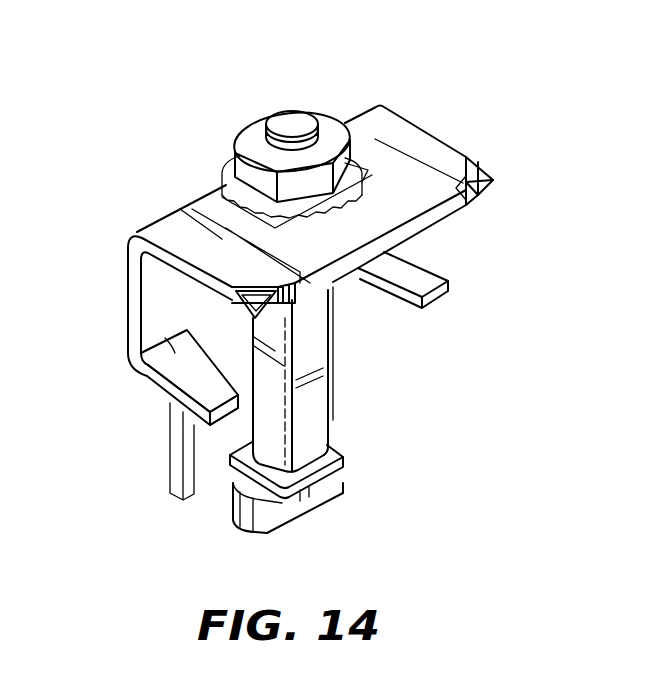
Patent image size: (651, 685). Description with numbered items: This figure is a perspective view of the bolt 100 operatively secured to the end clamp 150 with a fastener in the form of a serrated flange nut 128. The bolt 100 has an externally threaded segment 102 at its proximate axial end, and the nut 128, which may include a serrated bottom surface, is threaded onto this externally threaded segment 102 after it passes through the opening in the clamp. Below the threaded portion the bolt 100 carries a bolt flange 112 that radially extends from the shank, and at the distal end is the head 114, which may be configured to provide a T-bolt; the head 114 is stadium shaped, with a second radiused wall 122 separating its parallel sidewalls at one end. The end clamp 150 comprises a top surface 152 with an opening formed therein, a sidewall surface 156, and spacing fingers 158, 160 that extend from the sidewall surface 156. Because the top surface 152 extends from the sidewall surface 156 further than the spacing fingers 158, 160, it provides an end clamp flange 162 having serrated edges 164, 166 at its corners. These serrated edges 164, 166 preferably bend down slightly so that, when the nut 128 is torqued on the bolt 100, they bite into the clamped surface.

The bolt 100 is at (342, 366).
The externally threaded segment 102 is at (262, 122).
The bolt flange 112 is at (344, 454).
The head 114 is at (340, 497).
The second radiused wall 122 is at (240, 527).
The serrated flange nut 128 is at (234, 165).
The end clamp 150 is at (382, 101).
The top surface 152 is at (442, 150).
The sidewall surface 156 is at (158, 331).
The spacing finger 158 is at (197, 413).
The spacing finger 160 is at (447, 297).
The end clamp flange 162 is at (432, 230).
The serrated edge 164 is at (252, 322).
The serrated edge 166 is at (480, 196).